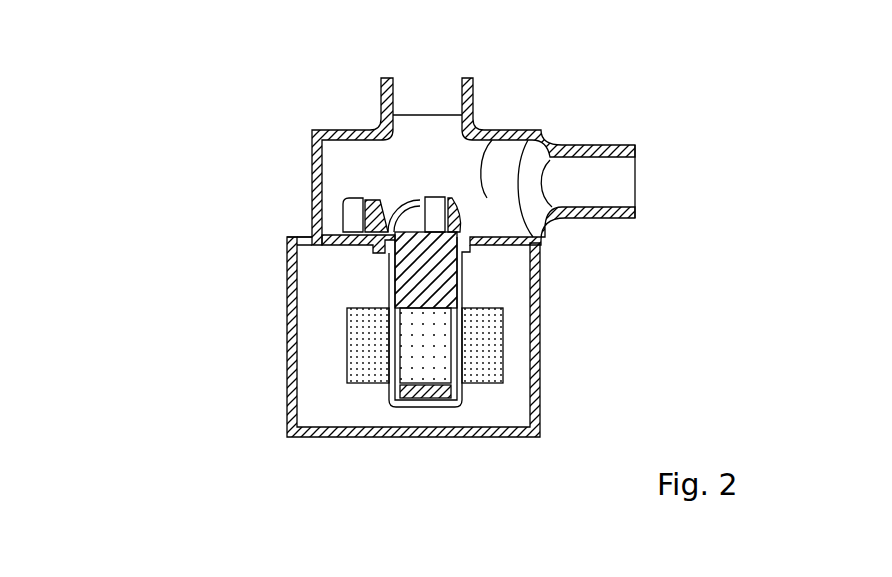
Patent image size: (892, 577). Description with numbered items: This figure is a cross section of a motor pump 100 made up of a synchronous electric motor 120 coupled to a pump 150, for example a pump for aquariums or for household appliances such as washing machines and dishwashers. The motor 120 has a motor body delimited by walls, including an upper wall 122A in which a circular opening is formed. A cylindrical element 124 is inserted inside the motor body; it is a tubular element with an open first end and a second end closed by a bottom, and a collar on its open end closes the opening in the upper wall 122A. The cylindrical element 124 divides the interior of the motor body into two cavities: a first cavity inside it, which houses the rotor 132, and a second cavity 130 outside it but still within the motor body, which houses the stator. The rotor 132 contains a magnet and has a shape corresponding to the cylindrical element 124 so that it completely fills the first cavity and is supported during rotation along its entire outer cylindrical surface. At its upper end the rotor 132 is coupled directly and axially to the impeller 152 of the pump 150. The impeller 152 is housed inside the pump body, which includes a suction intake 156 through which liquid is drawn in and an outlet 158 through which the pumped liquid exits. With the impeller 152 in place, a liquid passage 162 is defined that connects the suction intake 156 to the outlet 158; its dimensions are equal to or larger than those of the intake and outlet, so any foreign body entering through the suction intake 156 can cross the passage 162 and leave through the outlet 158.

The motor pump 100 is at (160, 172).
The synchronous electric motor 120 is at (285, 373).
The upper wall 122A is at (288, 237).
The cylindrical element 124 is at (467, 280).
The second cavity 130 is at (517, 403).
The rotor 132 is at (463, 294).
The pump 150 is at (310, 170).
The impeller 152 is at (488, 145).
The suction intake 156 is at (395, 98).
The outlet 158 is at (606, 208).
The passage 162 is at (342, 153).